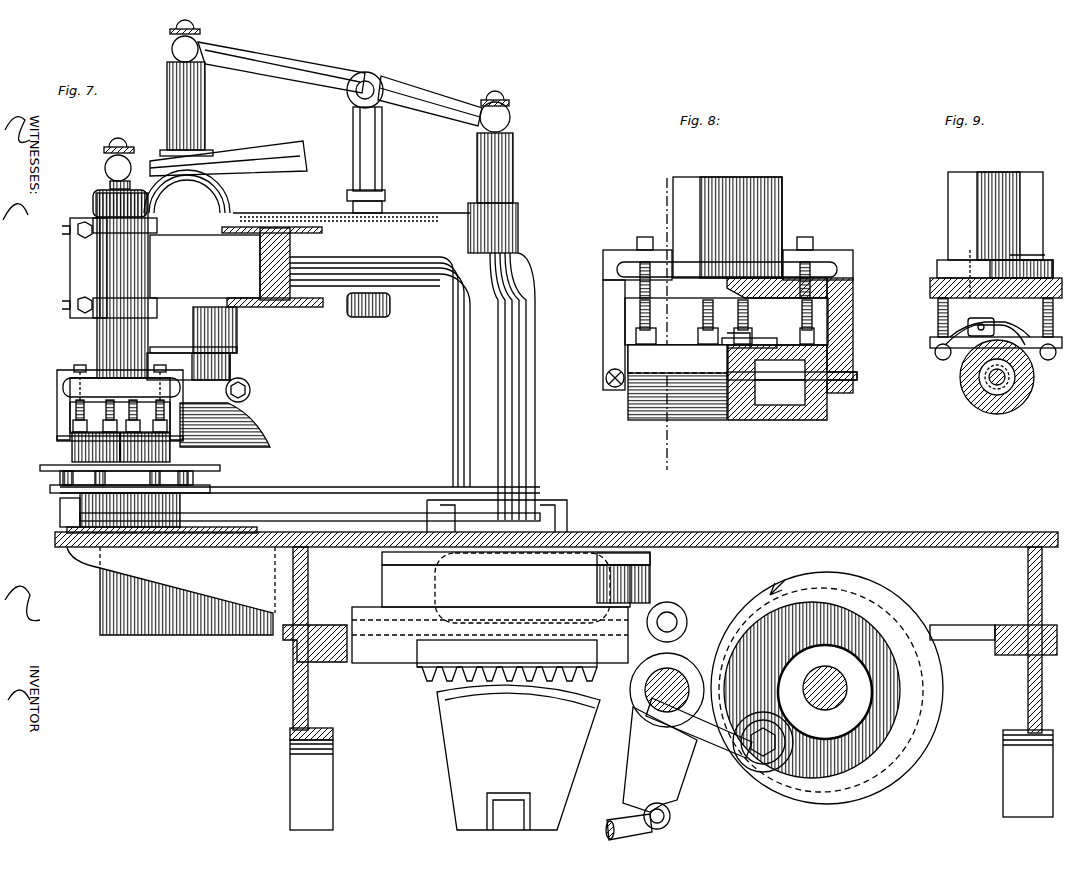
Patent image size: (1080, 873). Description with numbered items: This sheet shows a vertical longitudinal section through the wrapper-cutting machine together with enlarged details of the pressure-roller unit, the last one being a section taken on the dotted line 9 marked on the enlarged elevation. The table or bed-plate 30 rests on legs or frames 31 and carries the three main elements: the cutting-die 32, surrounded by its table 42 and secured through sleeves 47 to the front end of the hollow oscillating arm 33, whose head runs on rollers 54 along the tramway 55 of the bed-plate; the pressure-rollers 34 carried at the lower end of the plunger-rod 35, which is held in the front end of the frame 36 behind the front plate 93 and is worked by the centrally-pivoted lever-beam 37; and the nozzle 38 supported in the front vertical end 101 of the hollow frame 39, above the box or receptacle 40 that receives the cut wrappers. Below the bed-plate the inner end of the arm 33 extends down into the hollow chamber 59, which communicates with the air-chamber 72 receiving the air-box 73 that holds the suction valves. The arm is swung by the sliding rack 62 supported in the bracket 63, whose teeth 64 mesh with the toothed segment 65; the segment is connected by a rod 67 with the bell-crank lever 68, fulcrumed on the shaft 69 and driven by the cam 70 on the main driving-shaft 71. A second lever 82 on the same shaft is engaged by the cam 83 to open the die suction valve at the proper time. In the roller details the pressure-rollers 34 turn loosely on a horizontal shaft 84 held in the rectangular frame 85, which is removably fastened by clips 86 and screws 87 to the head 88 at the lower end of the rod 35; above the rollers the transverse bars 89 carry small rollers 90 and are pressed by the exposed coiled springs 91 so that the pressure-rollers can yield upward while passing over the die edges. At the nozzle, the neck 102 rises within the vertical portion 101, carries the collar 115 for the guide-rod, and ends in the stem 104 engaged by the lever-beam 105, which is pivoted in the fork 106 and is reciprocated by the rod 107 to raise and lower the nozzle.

In FIG. 8, the section line 9 9 is at (661, 321).
In FIG. 7, the table or bed-plate 30 is at (625, 527).
In FIG. 7, the legs or frames 31 is at (670, 688).
In FIG. 7, the cutting-die 32 is at (126, 477).
In FIG. 7, the oscillating arm 33 is at (340, 487).
In FIG. 7, the pressure-rollers 34 is at (72, 452).
In FIG. 8, the pressure-rollers 34 is at (790, 428).
In FIG. 9, the pressure-rollers 34 is at (980, 410).
In FIG. 7, the plunger-rod 35 is at (96, 331).
In FIG. 8, the plunger-rod 35 is at (750, 190).
In FIG. 9, the plunger-rod 35 is at (948, 196).
In FIG. 7, the frame 36 is at (176, 268).
In FIG. 7, the lever-beam 37 is at (275, 150).
In FIG. 7, the nozzle 38 is at (227, 423).
In FIG. 7, the hollow frame or arm 39 is at (378, 366).
In FIG. 7, the box or receptacle 40 is at (127, 630).
In FIG. 7, the table 42 is at (40, 468).
In FIG. 7, the sleeves 47 is at (210, 480).
In FIG. 7, the rollers 54 is at (60, 502).
In FIG. 7, the tramway 55 is at (67, 530).
In FIG. 7, the hollow chamber 59 is at (522, 588).
In FIG. 7, the sliding rack 62 is at (420, 645).
In FIG. 7, the bracket 63 is at (501, 607).
In FIG. 7, the teeth 64 is at (425, 682).
In FIG. 7, the toothed segment 65 is at (518, 757).
In FIG. 7, the rod 67 is at (616, 820).
In FIG. 7, the bell-crank lever 68 is at (660, 768).
In FIG. 7, the shaft 69 is at (673, 672).
In FIG. 7, the cam 70 is at (880, 595).
In FIG. 7, the main driving-shaft 71 is at (832, 670).
In FIG. 7, the air-chamber 72 is at (648, 590).
In FIG. 7, the air-box 73 is at (670, 602).
In FIG. 7, the lever or arm 82 is at (622, 710).
In FIG. 7, the cam 83 is at (830, 790).
In FIG. 7, the horizontal shaft 84 is at (57, 437).
In FIG. 8, the horizontal shaft 84 is at (857, 376).
In FIG. 9, the horizontal shaft 84 is at (1005, 380).
In FIG. 7, the rectangular frame 85 is at (70, 409).
In FIG. 8, the rectangular frame 85 is at (603, 320).
In FIG. 9, the rectangular frame 85 is at (930, 281).
In FIG. 7, the clips 86 is at (57, 380).
In FIG. 8, the clips 86 is at (612, 250).
In FIG. 9, the clips 86 is at (1012, 255).
In FIG. 7, the screws 87 is at (80, 365).
In FIG. 8, the screws 87 is at (642, 237).
In FIG. 7, the head 88 is at (60, 372).
In FIG. 8, the head 88 is at (727, 269).
In FIG. 9, the head 88 is at (940, 262).
In FIG. 7, the transverse bars 89 is at (70, 424).
In FIG. 8, the transverse bars 89 is at (658, 334).
In FIG. 9, the transverse bars 89 is at (938, 348).
In FIG. 8, the rollers 90 is at (750, 334).
In FIG. 9, the rollers 90 is at (982, 320).
In FIG. 7, the coiled springs 91 is at (120, 410).
In FIG. 8, the coiled springs 91 is at (652, 312).
In FIG. 9, the coiled springs 91 is at (938, 318).
In FIG. 7, the front plate 93 is at (59, 268).
In FIG. 7, the front vertical end 101 is at (161, 193).
In FIG. 7, the neck 102 is at (228, 378).
In FIG. 7, the stem 104 is at (203, 120).
In FIG. 7, the lever-beam 105 is at (340, 79).
In FIG. 7, the fork 106 is at (380, 175).
In FIG. 7, the rod 107 is at (510, 175).
In FIG. 7, the collar 115 is at (252, 390).